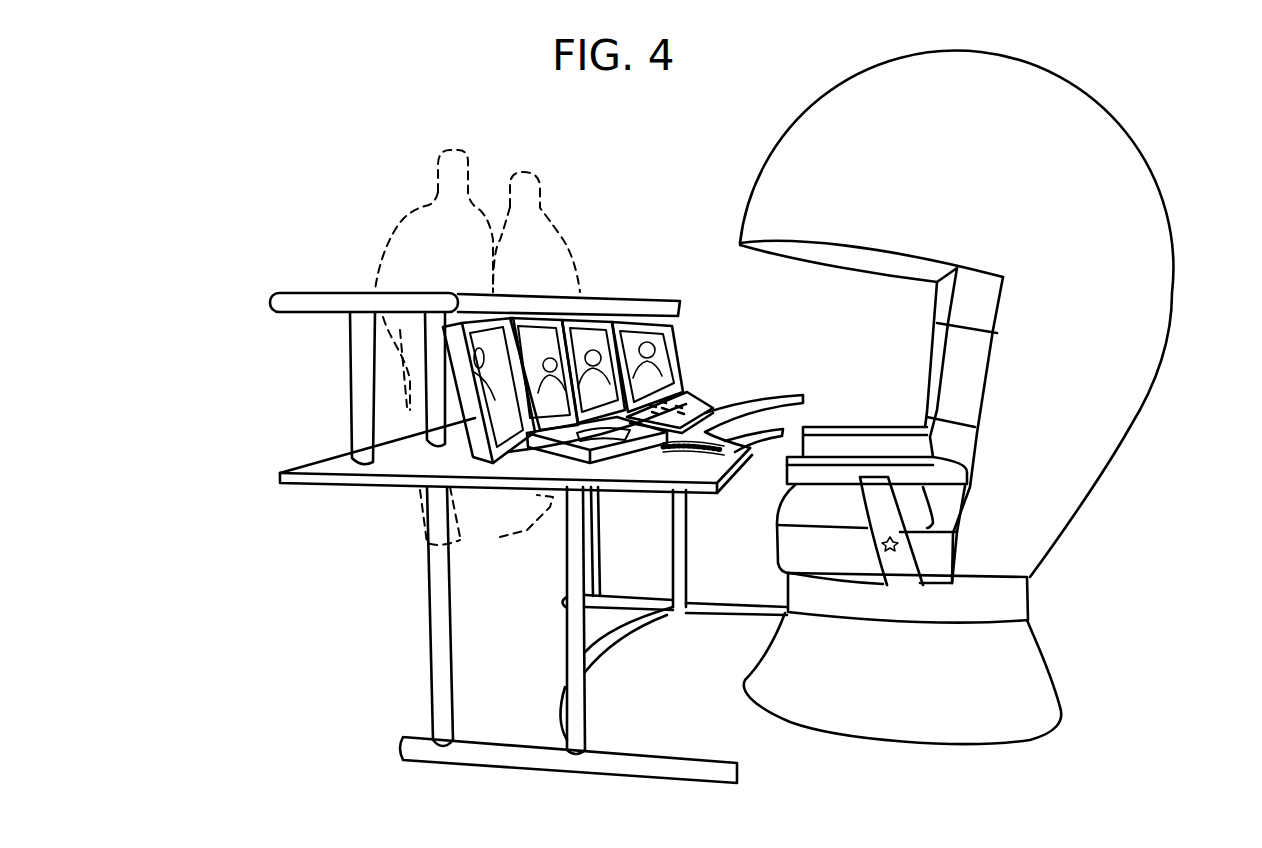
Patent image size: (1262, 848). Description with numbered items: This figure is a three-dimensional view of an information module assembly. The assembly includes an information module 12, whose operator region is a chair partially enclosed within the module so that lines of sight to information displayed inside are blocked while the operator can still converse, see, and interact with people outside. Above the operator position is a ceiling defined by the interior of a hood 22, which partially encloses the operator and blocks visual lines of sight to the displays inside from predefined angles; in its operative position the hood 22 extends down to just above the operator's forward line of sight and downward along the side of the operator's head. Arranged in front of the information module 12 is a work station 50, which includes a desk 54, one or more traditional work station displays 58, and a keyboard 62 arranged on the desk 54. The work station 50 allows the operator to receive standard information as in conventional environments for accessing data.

The information module 12 is at (1072, 602).
The hood 22 is at (993, 50).
The work station 50 is at (307, 263).
The desk 54 is at (397, 479).
The work station displays 58 is at (653, 338).
The keyboard 62 is at (700, 403).